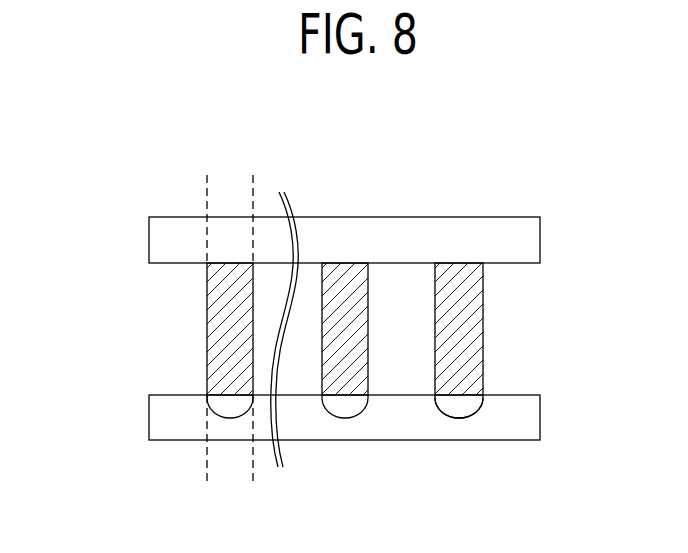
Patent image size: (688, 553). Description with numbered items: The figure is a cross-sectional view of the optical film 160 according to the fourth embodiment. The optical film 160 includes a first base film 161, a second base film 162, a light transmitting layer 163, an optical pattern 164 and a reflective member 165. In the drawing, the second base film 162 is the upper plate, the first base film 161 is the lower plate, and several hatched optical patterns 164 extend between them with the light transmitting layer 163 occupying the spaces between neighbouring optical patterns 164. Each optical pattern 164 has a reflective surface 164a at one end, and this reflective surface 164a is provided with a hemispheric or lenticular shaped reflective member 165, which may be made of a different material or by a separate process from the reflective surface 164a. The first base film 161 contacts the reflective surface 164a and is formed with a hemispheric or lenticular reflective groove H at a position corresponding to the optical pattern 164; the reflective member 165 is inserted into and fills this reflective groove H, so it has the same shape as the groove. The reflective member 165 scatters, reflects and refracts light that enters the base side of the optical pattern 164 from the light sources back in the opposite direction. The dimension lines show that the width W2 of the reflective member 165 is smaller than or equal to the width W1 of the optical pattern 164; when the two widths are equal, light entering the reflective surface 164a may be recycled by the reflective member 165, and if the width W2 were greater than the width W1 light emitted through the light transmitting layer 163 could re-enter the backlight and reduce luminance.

The optical film 160 is at (68, 160).
The first base film 161 is at (531, 418).
The second base film 162 is at (533, 240).
The light transmitting layer 163 is at (403, 290).
The optical pattern 164 is at (477, 313).
The reflective surface 164a is at (480, 410).
The reflective member 165 is at (463, 405).
The reflective groove H is at (443, 422).
The width of the optical pattern W1 is at (253, 182).
The width of the reflective member W2 is at (253, 477).